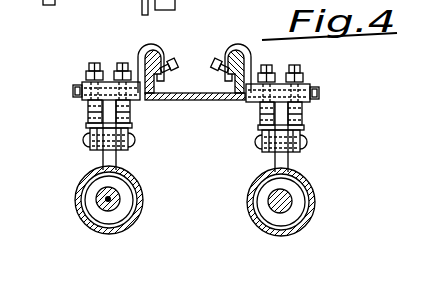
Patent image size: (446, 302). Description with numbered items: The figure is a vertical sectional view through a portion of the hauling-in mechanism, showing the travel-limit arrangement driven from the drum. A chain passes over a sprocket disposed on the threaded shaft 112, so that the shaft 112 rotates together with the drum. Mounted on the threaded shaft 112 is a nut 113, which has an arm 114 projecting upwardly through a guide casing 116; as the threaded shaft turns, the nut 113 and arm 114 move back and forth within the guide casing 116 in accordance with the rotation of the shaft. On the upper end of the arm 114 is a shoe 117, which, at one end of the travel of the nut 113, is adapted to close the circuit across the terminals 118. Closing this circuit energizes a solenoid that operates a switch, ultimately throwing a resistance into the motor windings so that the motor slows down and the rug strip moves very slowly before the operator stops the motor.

The threaded shaft 112 is at (118, 200).
The nut 113 is at (122, 190).
The arm 114 is at (107, 162).
The guide casing 116 is at (78, 200).
The shoe 117 is at (130, 128).
The terminals 118 is at (88, 117).